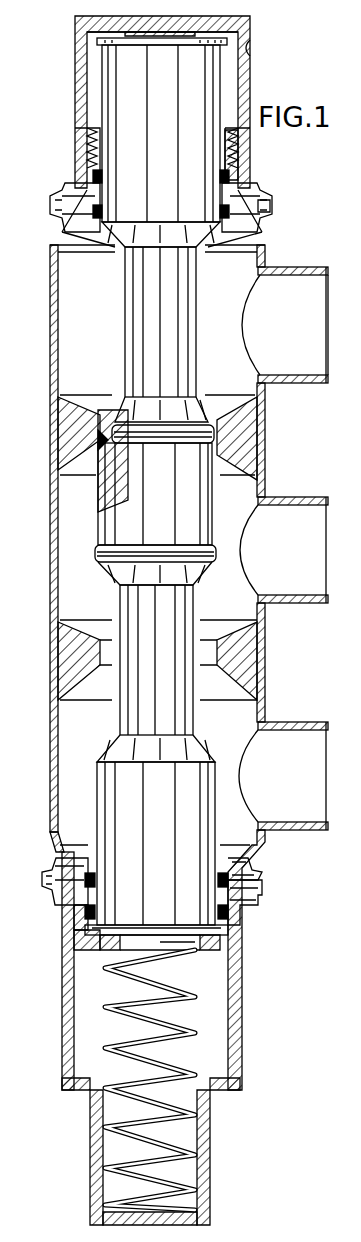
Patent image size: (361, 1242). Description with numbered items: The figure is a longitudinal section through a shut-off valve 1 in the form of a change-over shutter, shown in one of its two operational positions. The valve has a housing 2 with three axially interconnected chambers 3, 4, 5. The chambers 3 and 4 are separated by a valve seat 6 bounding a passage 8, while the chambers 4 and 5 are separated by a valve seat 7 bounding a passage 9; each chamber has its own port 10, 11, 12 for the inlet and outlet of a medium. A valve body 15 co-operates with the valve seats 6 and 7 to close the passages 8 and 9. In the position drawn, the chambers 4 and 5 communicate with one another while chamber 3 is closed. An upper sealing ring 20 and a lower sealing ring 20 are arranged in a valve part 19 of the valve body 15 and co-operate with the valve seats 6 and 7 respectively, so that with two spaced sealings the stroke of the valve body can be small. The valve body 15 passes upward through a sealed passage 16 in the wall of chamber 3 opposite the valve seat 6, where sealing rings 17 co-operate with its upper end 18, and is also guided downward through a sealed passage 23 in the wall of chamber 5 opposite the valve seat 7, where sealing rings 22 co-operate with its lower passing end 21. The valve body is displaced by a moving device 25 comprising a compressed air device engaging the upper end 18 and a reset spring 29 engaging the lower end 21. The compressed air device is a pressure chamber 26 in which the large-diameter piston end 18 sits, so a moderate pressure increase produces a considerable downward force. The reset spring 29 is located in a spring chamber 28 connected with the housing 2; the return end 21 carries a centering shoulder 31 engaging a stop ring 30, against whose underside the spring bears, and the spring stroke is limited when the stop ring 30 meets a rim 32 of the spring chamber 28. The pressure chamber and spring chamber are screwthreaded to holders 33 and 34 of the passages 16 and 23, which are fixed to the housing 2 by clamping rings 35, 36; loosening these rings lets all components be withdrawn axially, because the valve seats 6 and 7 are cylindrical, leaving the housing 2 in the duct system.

The shut-off valve 1 is at (156, 102).
The housing 2 is at (54, 314).
The chamber 3 is at (84, 366).
The chamber 4 is at (80, 588).
The chamber 5 is at (78, 818).
The valve seat 6 is at (80, 420).
The valve seat 7 is at (90, 650).
The passage 8 is at (88, 456).
The passage 9 is at (100, 672).
The port 10 is at (310, 354).
The port 11 is at (306, 566).
The port 12 is at (304, 790).
The valve body 15 is at (224, 70).
The sealed passage 16 is at (78, 186).
The sealing rings 17 is at (82, 160).
The upper end 18 is at (246, 190).
The valve part 19 is at (200, 478).
The sealing ring 20 is at (216, 436).
The lower passing end 21 is at (230, 932).
The sealing rings 22 is at (246, 918).
The sealed passage 23 is at (82, 904).
The moving device 25 is at (72, 66).
The pressure chamber 26 is at (168, 26).
The spring chamber 28 is at (70, 1043).
The reset spring 29 is at (118, 1135).
The stop ring 30 is at (74, 958).
The centering shoulder 31 is at (166, 950).
The rim 32 is at (232, 950).
The holder 33 is at (245, 183).
The holder 34 is at (76, 928).
The clamping ring 35 is at (270, 210).
The clamping ring 36 is at (250, 872).